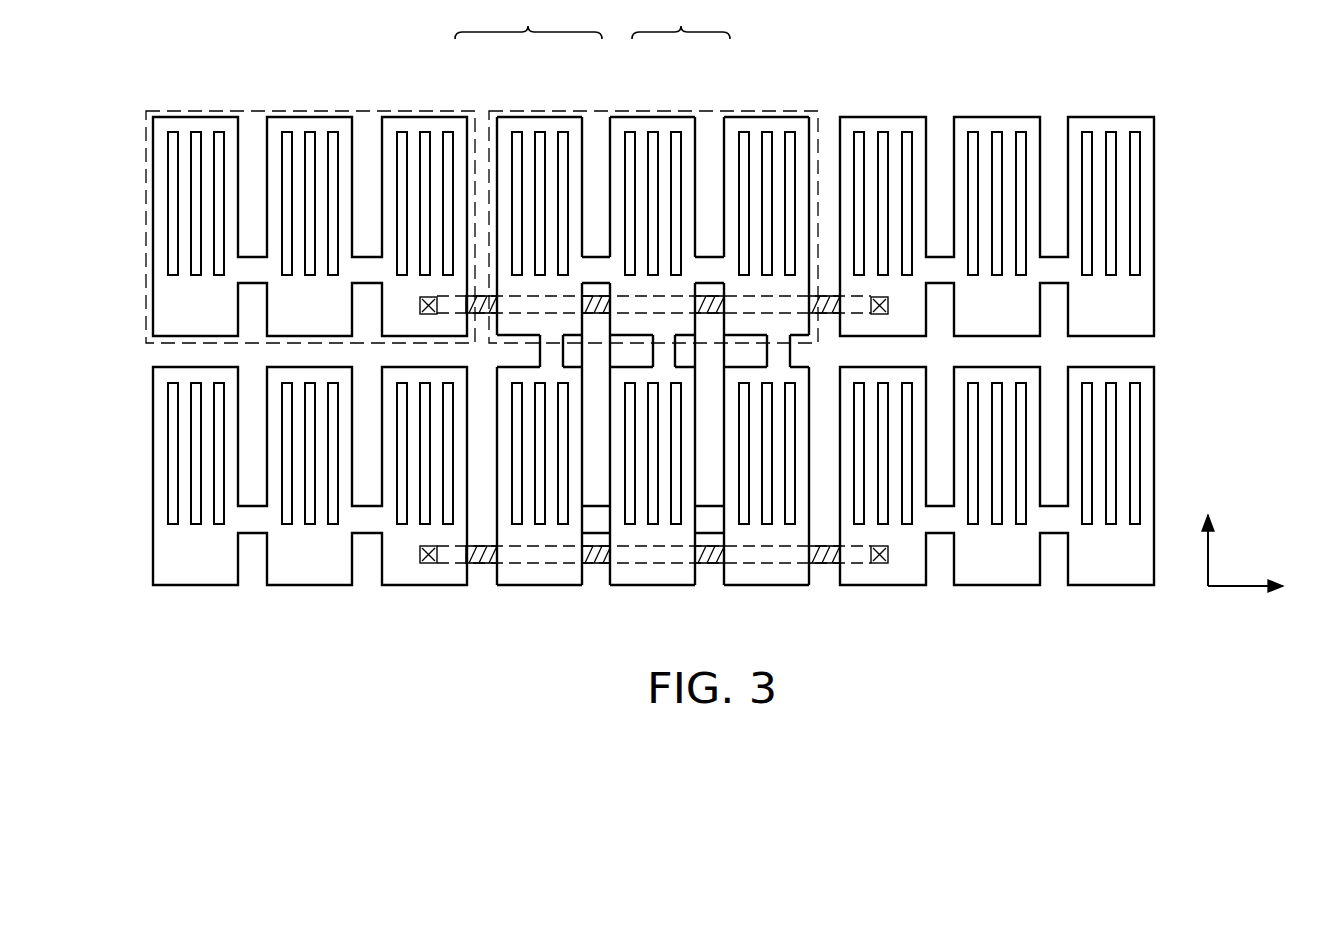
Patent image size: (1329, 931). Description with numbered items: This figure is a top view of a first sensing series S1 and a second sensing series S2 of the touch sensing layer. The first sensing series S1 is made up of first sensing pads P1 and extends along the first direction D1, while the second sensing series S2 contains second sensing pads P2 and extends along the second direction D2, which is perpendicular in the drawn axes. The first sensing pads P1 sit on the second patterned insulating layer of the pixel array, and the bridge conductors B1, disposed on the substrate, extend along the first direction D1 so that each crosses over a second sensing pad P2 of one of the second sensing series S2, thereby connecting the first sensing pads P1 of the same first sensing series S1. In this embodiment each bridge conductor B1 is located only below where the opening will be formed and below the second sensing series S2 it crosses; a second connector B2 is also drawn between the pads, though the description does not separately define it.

The first sensing pad P1 is at (313, 191).
The second sensing pad P2 is at (653, 191).
The bridge conductor B1 is at (594, 305).
The second bridge B2 is at (668, 356).
The first sensing series S1 is at (528, 19).
The second sensing series S2 is at (681, 19).
The first direction D1 is at (1260, 583).
The second direction D2 is at (1211, 536).